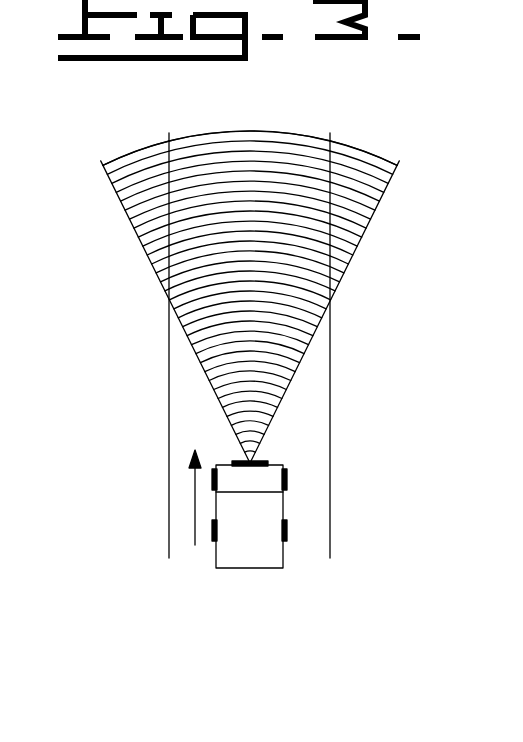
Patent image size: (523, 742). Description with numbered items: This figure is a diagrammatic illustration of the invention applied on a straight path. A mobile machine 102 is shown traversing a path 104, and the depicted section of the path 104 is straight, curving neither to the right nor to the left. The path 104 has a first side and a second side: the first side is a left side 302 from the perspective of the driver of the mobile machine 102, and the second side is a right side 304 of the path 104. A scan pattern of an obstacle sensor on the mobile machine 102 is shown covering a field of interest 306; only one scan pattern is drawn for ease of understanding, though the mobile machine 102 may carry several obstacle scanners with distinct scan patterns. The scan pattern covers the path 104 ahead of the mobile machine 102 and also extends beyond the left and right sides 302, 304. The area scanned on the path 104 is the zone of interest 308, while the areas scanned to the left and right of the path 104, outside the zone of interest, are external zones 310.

The mobile machine 102 is at (283, 563).
The path 104 is at (262, 604).
The left side 302 is at (168, 477).
The right side 304 is at (331, 470).
The field of interest 306 is at (293, 124).
The zone of interest 308 is at (212, 131).
The external zones 310 is at (121, 162).